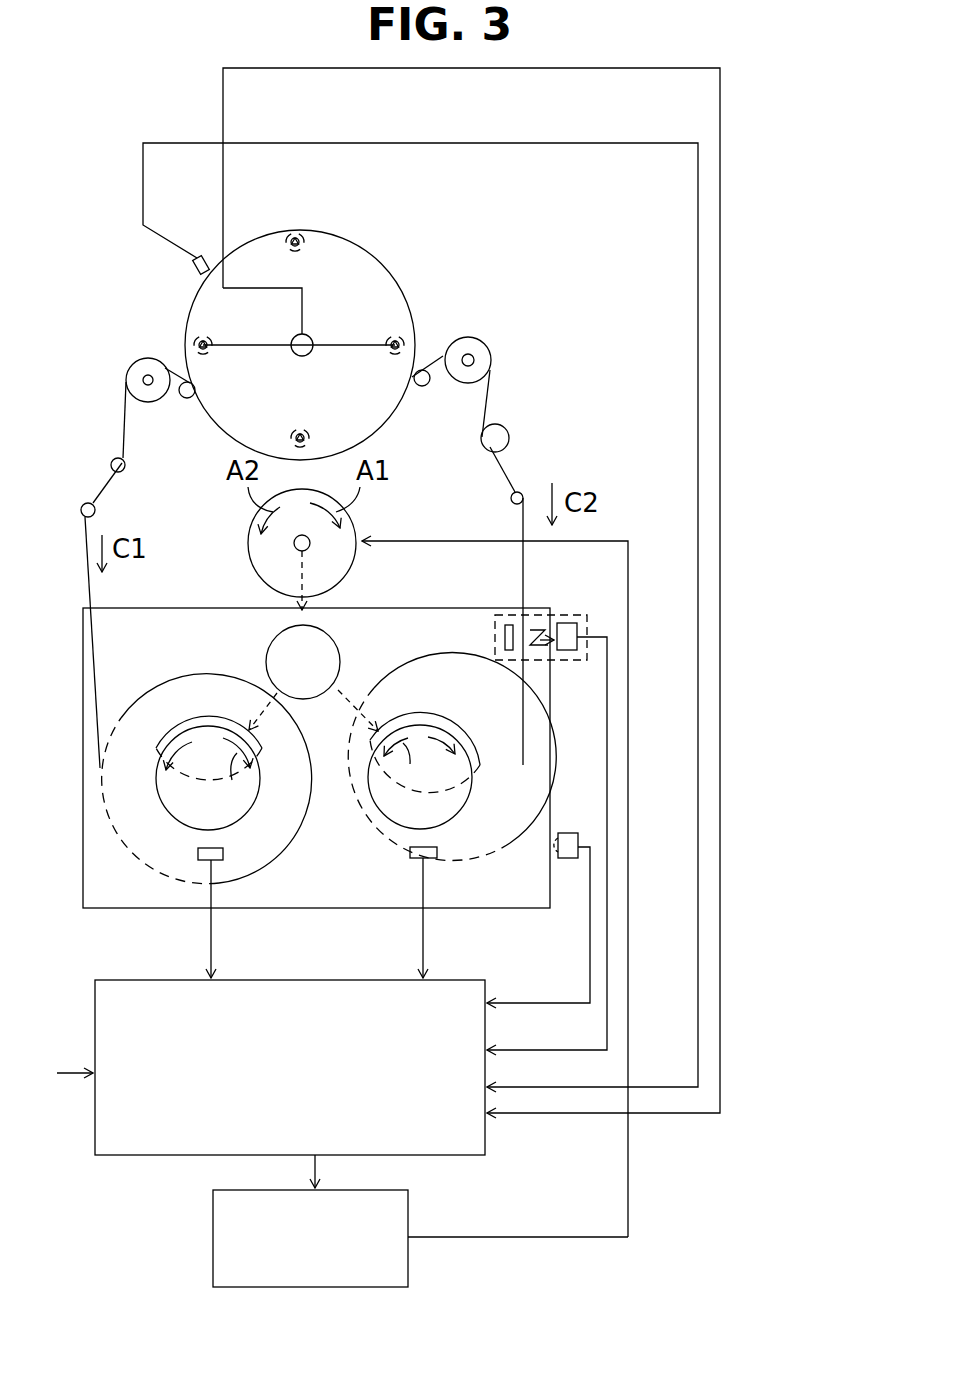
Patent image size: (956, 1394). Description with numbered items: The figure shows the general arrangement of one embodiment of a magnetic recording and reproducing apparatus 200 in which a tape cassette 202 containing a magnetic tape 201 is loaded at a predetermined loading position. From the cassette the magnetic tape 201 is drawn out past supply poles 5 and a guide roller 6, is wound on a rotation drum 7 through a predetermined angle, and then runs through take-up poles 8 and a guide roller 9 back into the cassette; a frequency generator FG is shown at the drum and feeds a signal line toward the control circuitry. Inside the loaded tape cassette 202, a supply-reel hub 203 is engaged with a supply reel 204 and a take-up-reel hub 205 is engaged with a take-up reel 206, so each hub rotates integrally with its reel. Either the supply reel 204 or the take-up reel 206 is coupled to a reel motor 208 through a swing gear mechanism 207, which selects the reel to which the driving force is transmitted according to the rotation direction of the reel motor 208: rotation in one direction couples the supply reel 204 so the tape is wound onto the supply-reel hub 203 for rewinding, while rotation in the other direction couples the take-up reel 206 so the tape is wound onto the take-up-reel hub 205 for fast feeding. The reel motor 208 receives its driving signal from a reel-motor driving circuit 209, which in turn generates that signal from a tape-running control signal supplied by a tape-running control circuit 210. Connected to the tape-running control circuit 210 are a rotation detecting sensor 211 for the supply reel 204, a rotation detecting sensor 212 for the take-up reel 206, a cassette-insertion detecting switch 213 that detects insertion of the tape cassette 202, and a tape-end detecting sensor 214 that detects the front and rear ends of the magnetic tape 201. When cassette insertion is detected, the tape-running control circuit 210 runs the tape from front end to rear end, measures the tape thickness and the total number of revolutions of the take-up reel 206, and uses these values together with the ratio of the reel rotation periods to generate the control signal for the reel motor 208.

The magnetic recording and reproducing apparatus 200 is at (130, 75).
The supply poles 5 is at (112, 463).
The guide roller 6 is at (132, 372).
The rotation drum 7 is at (358, 292).
The take-up poles 8 is at (425, 387).
The guide roller 9 is at (470, 356).
The frequency generator FG is at (192, 271).
The magnetic tape 201 is at (83, 600).
The tape cassette 202 is at (80, 645).
The supply-reel hub 203 is at (100, 766).
The supply reel 204 is at (180, 803).
The take-up-reel hub 205 is at (473, 742).
The take-up reel 206 is at (458, 788).
The swing gear mechanism 207 is at (268, 652).
The reel motor 208 is at (247, 525).
The reel-motor driving circuit 209 is at (410, 1222).
The tape-running control circuit 210 is at (122, 1156).
The rotation detecting sensor 211 is at (200, 862).
The rotation detecting sensor 212 is at (430, 858).
The cassette-insertion detecting switch 213 is at (580, 838).
The tape-end detecting sensor 214 is at (570, 615).